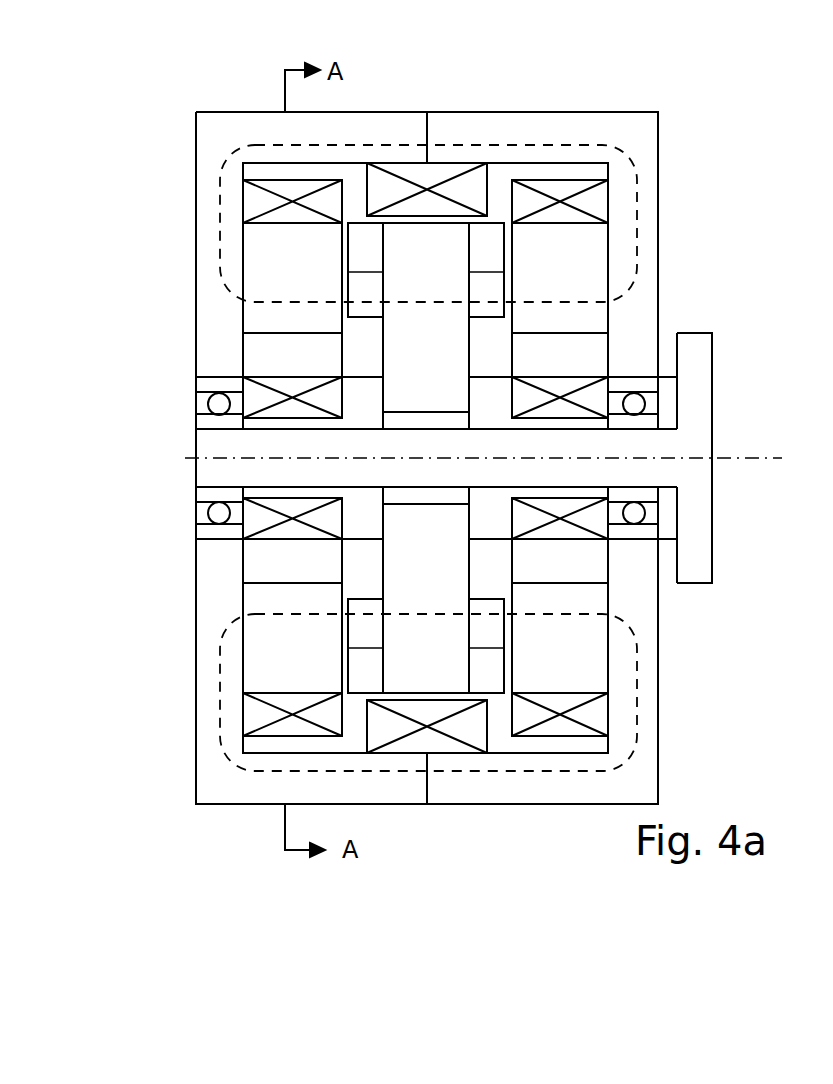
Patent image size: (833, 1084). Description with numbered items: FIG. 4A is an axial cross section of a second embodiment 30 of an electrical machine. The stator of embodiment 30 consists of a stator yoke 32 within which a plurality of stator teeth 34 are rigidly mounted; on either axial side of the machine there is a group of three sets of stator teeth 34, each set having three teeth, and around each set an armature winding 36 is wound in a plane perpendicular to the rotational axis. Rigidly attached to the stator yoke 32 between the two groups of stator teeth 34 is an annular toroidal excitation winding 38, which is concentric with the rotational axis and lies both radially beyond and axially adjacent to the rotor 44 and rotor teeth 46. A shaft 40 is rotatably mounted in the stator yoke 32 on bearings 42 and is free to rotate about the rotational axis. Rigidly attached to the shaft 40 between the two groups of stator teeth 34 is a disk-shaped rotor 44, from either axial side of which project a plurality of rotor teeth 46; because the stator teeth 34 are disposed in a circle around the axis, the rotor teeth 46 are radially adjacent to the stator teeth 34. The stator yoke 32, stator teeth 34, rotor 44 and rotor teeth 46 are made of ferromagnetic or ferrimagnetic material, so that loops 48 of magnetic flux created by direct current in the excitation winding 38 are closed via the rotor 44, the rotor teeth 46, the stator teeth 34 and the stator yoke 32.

The second embodiment of an electrical machine 30 is at (690, 147).
The stator yoke 32 is at (427, 458).
The stator teeth 34 is at (425, 458).
The armature winding 36 is at (262, 197).
The excitation winding 38 is at (432, 175).
The shaft 40 is at (483, 456).
The bearings 42 is at (220, 405).
The rotor 44 is at (426, 458).
The rotor teeth 46 is at (426, 458).
The loops of magnetic flux 48 is at (620, 279).